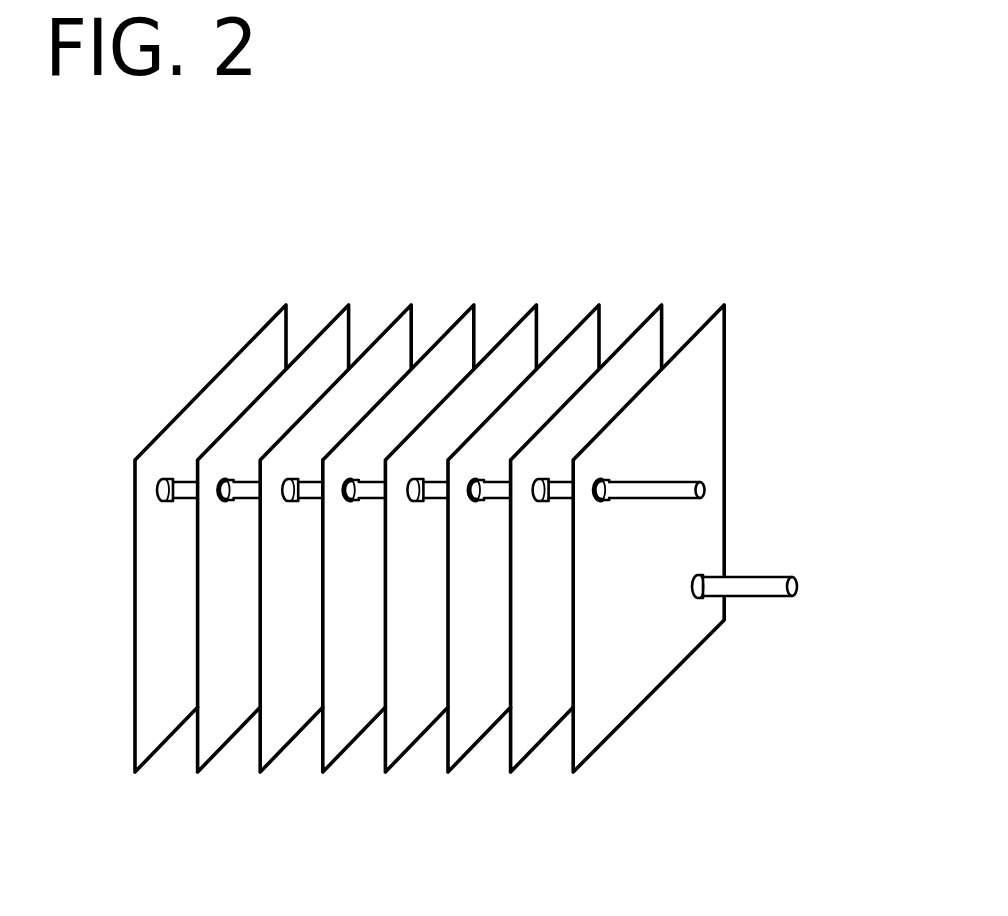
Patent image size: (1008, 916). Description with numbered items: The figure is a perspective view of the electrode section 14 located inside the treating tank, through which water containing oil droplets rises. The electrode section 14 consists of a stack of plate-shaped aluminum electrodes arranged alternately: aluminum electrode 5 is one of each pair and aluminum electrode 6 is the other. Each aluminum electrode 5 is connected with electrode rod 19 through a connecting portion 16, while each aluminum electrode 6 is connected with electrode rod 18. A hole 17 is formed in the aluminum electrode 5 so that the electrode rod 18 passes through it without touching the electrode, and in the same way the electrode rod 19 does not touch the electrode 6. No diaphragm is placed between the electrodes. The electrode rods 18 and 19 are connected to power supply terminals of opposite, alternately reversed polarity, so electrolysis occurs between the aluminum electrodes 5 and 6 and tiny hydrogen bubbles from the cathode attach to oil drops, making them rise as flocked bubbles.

The electrode section 14 is at (481, 268).
The aluminum electrode 5 is at (463, 757).
The aluminum electrode 6 is at (398, 759).
The connecting portion 16 is at (605, 477).
The hole 17 is at (694, 600).
The electrode rod 18 is at (798, 590).
The electrode rod 19 is at (705, 489).